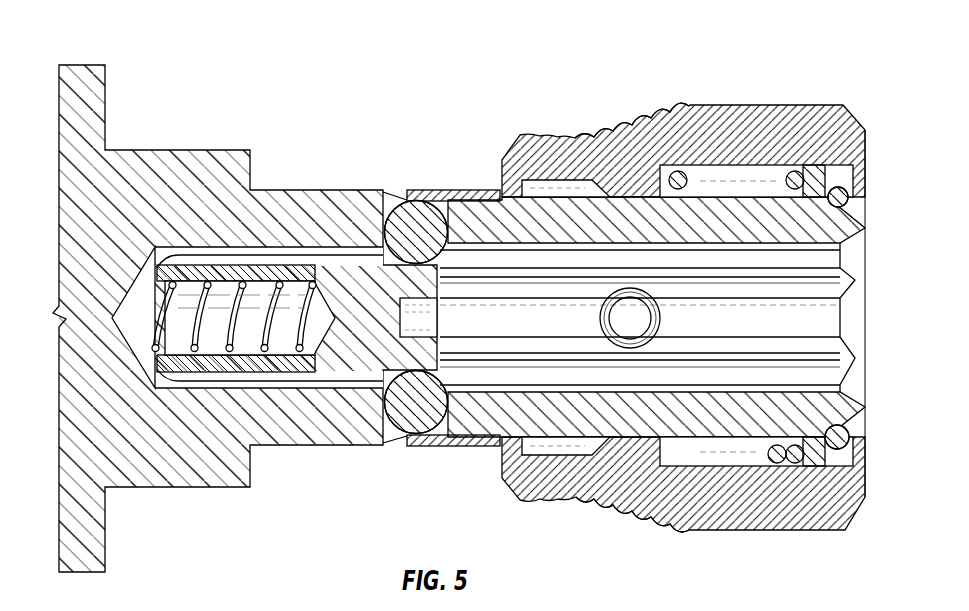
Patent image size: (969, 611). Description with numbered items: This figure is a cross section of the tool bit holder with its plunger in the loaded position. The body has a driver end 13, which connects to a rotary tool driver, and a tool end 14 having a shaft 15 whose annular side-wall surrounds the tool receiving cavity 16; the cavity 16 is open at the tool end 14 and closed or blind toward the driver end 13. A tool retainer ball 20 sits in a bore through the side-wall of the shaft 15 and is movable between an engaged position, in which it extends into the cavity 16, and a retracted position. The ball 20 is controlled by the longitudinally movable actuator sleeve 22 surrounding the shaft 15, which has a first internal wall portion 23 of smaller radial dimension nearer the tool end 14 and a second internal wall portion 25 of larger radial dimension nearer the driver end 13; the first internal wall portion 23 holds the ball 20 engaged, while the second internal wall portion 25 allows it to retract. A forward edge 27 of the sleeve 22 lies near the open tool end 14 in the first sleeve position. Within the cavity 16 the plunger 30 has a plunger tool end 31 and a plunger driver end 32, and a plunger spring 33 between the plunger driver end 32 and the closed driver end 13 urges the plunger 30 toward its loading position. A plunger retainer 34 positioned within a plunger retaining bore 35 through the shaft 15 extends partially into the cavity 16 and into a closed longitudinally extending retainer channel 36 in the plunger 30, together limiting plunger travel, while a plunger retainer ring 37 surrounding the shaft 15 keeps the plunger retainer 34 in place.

The driver end 13 is at (108, 325).
The tool end 14 is at (852, 225).
The shaft 15 is at (712, 417).
The tool receiving cavity 16 is at (737, 317).
The tool retainer ball 20 is at (630, 322).
The actuator sleeve 22 is at (748, 122).
The first internal wall portion 23 is at (633, 183).
The second internal wall portion 25 is at (552, 178).
The forward edge 27 is at (867, 140).
The plunger 30 is at (337, 300).
The plunger tool end 31 is at (427, 322).
The plunger driver end 32 is at (140, 256).
The plunger spring 33 is at (240, 302).
The plunger retainer 34 is at (400, 402).
The plunger retaining bore 35 is at (406, 204).
The retainer channel 36 is at (263, 380).
The plunger retainer ring 37 is at (433, 438).